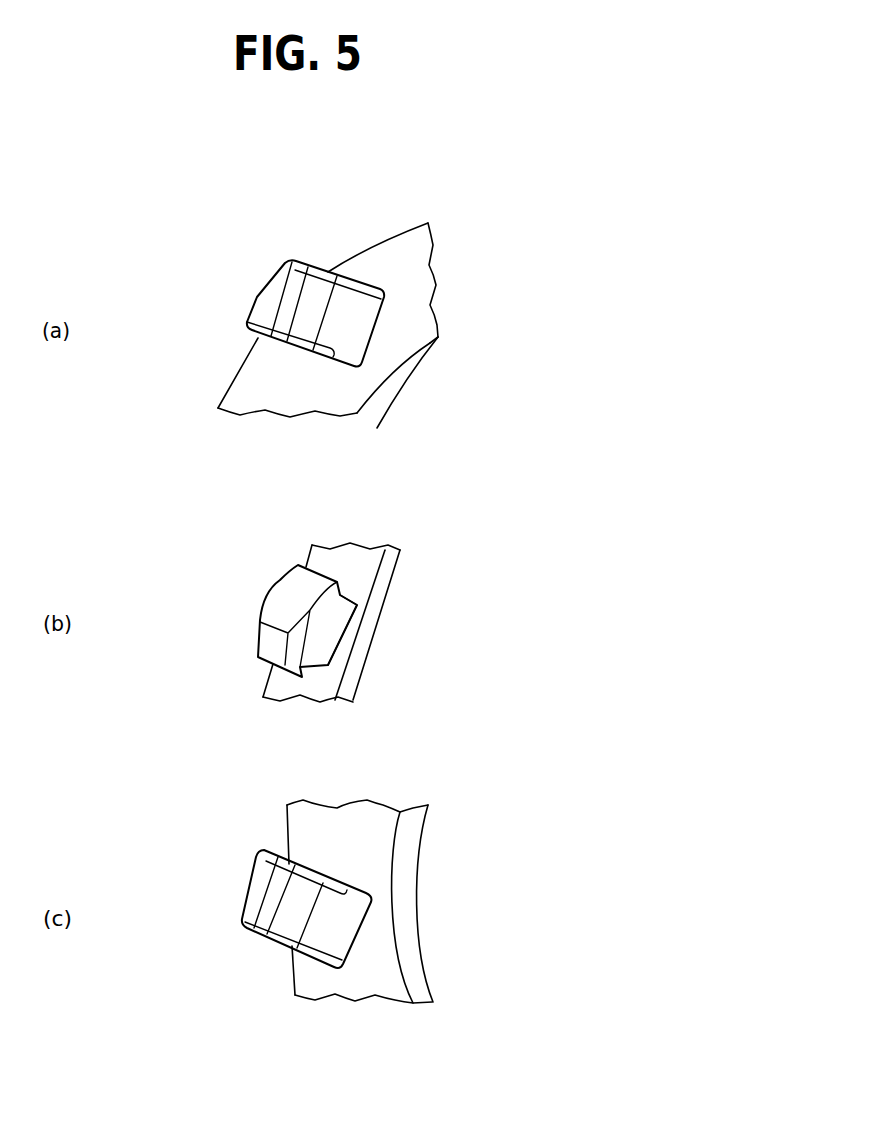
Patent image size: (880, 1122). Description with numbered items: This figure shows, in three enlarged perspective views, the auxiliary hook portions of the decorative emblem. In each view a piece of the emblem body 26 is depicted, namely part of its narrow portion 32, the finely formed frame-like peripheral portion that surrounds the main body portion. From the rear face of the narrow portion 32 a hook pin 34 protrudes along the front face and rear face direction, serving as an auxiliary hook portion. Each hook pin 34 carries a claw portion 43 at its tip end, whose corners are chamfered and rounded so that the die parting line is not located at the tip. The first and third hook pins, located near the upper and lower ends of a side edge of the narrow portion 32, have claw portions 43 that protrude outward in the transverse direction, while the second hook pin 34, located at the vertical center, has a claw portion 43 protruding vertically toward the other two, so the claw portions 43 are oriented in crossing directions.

The emblem body 26 is at (360, 255).
The narrow portion 32 is at (408, 235).
The hook pin 34 is at (362, 335).
The claw portion 43 is at (267, 290).